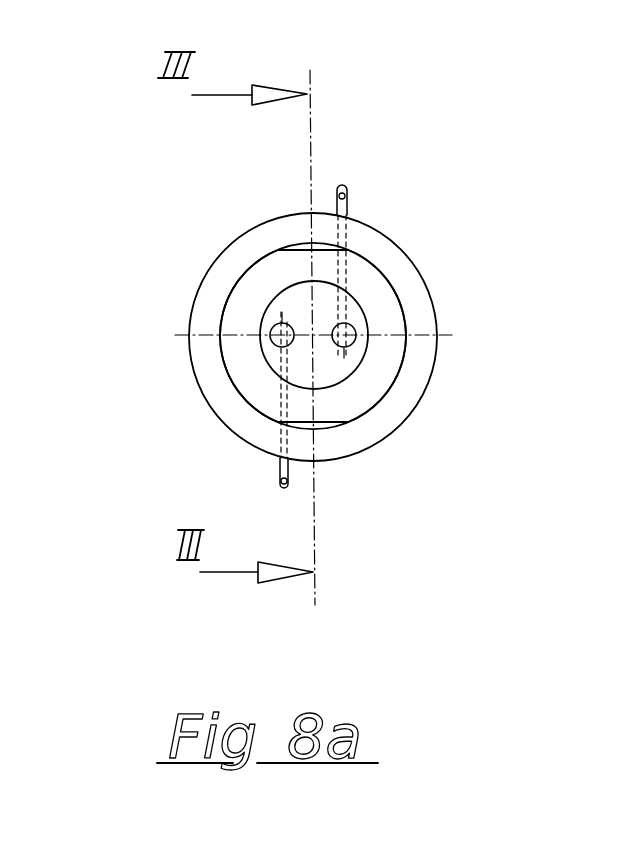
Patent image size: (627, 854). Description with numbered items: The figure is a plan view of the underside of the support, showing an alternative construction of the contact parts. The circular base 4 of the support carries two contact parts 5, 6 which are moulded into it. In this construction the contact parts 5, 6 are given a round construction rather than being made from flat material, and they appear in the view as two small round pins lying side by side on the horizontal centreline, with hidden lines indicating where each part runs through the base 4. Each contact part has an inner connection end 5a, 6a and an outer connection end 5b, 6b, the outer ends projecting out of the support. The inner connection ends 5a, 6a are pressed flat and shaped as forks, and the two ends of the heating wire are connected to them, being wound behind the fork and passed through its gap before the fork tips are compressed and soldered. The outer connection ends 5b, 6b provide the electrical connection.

The base 4 is at (203, 258).
The contact part 5 is at (362, 210).
The inner connection end 5a is at (347, 197).
The outer connection end 5b is at (347, 332).
The contact part 6 is at (273, 458).
The inner connection end 6a is at (275, 475).
The outer connection end 6b is at (280, 338).